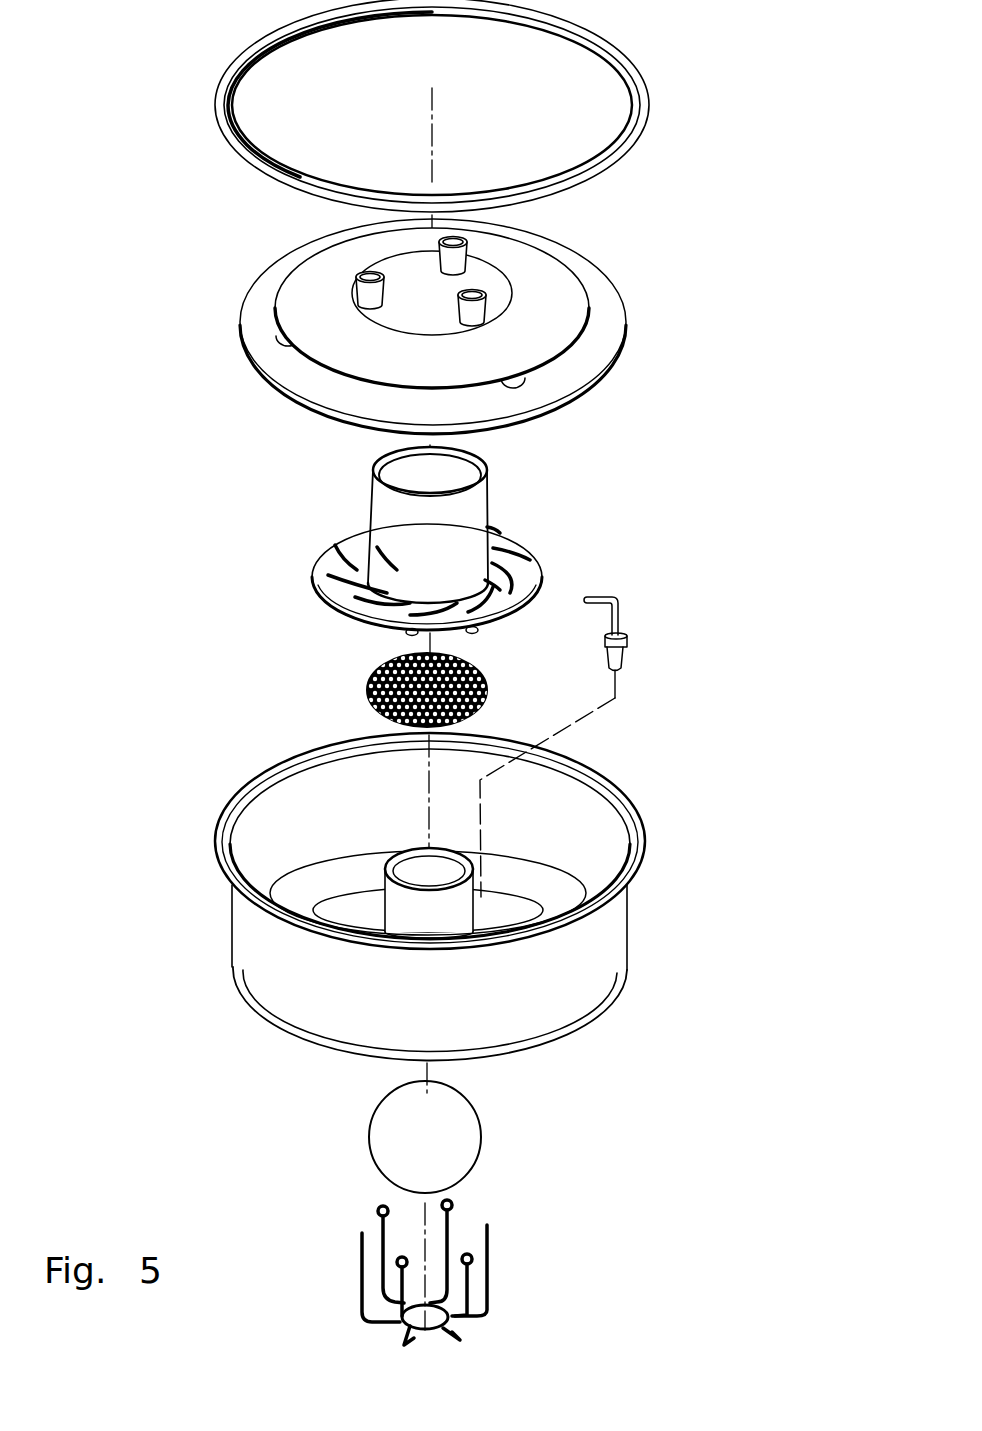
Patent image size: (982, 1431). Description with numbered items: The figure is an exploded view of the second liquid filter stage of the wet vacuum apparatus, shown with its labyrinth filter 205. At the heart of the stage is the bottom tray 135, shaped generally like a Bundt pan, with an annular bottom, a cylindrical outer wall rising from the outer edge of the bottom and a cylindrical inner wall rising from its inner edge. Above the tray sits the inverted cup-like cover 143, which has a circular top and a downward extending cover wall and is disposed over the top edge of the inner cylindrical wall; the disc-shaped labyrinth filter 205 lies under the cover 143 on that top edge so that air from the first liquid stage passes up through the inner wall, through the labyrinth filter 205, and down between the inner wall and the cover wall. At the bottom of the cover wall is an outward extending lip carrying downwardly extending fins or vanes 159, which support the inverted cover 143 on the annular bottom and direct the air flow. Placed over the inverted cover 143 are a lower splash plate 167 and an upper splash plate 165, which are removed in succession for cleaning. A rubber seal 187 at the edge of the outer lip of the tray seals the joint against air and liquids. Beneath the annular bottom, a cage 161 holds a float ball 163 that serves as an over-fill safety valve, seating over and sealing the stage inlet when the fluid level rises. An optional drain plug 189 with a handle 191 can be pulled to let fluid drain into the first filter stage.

The rubber seal 187 is at (627, 152).
The lower splash plate 167 is at (610, 332).
The upper splash plate 165 is at (538, 258).
The inverted cup-like cover 143 is at (482, 498).
The fins or vanes 159 is at (353, 615).
The labyrinth filter 205 is at (482, 670).
The handle 191 is at (617, 595).
The drain plug 189 is at (623, 660).
The bottom tray 135 is at (609, 946).
The float ball 163 is at (477, 1138).
The cage 161 is at (490, 1260).